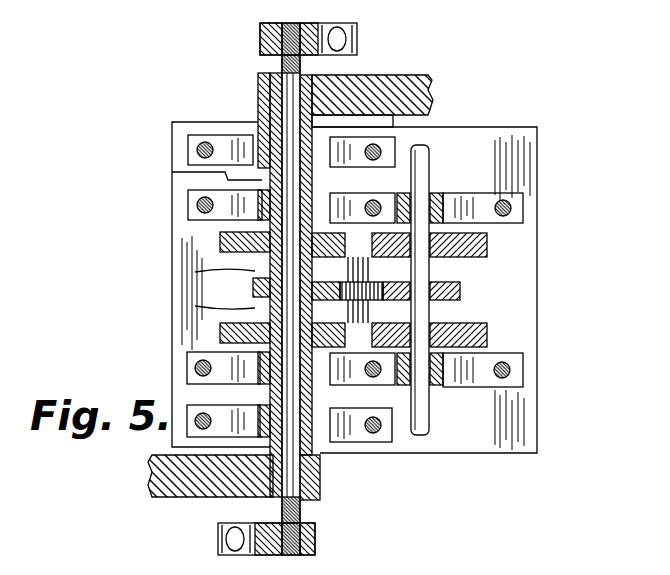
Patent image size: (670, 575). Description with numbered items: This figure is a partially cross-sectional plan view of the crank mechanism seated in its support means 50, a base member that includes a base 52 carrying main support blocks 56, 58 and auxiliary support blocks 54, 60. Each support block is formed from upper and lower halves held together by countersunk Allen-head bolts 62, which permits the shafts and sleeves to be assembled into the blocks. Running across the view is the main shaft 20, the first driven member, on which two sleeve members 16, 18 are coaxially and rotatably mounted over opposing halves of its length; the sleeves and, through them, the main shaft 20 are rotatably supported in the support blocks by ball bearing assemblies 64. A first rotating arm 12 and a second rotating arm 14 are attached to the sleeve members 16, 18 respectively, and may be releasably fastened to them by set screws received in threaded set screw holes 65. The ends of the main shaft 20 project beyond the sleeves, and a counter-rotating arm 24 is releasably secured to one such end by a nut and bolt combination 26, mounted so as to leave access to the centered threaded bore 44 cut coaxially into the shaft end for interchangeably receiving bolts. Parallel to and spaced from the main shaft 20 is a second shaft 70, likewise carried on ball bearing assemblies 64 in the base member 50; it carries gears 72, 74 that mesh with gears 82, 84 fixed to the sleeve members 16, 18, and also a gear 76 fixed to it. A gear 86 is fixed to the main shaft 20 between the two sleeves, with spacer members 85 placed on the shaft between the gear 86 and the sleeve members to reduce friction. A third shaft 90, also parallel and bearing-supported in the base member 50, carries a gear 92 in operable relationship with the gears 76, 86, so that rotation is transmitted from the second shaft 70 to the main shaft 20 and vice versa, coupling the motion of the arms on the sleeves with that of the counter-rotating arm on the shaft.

The first rotating arm 12 is at (152, 491).
The second rotating arm 14 is at (434, 83).
The sleeve member 16 is at (310, 507).
The sleeve member 18 is at (270, 122).
The main shaft 20 is at (282, 68).
The counter-rotating arm 24 is at (368, 46).
The nut and bolt combination 26 is at (358, 38).
The centered threaded bore 44 is at (262, 44).
The support means 50 is at (538, 447).
The base 52 is at (525, 430).
The auxiliary support block 54 is at (443, 420).
The main support block 56 is at (525, 385).
The main support block 58 is at (540, 203).
The auxiliary support block 60 is at (190, 150).
The countersunk Allen-head bolt 62 is at (188, 125).
The ball bearing assembly 64 is at (490, 180).
The threaded set screw hole 65 is at (258, 98).
The second shaft 70 is at (428, 148).
The gear 72 is at (490, 338).
The gear 74 is at (500, 250).
The gear 76 is at (460, 292).
The gear 82 is at (220, 333).
The gear 84 is at (220, 240).
The spacer member 85 is at (195, 270).
The gear 86 is at (253, 287).
The third shaft 90 is at (373, 270).
The gear 92 is at (372, 315).